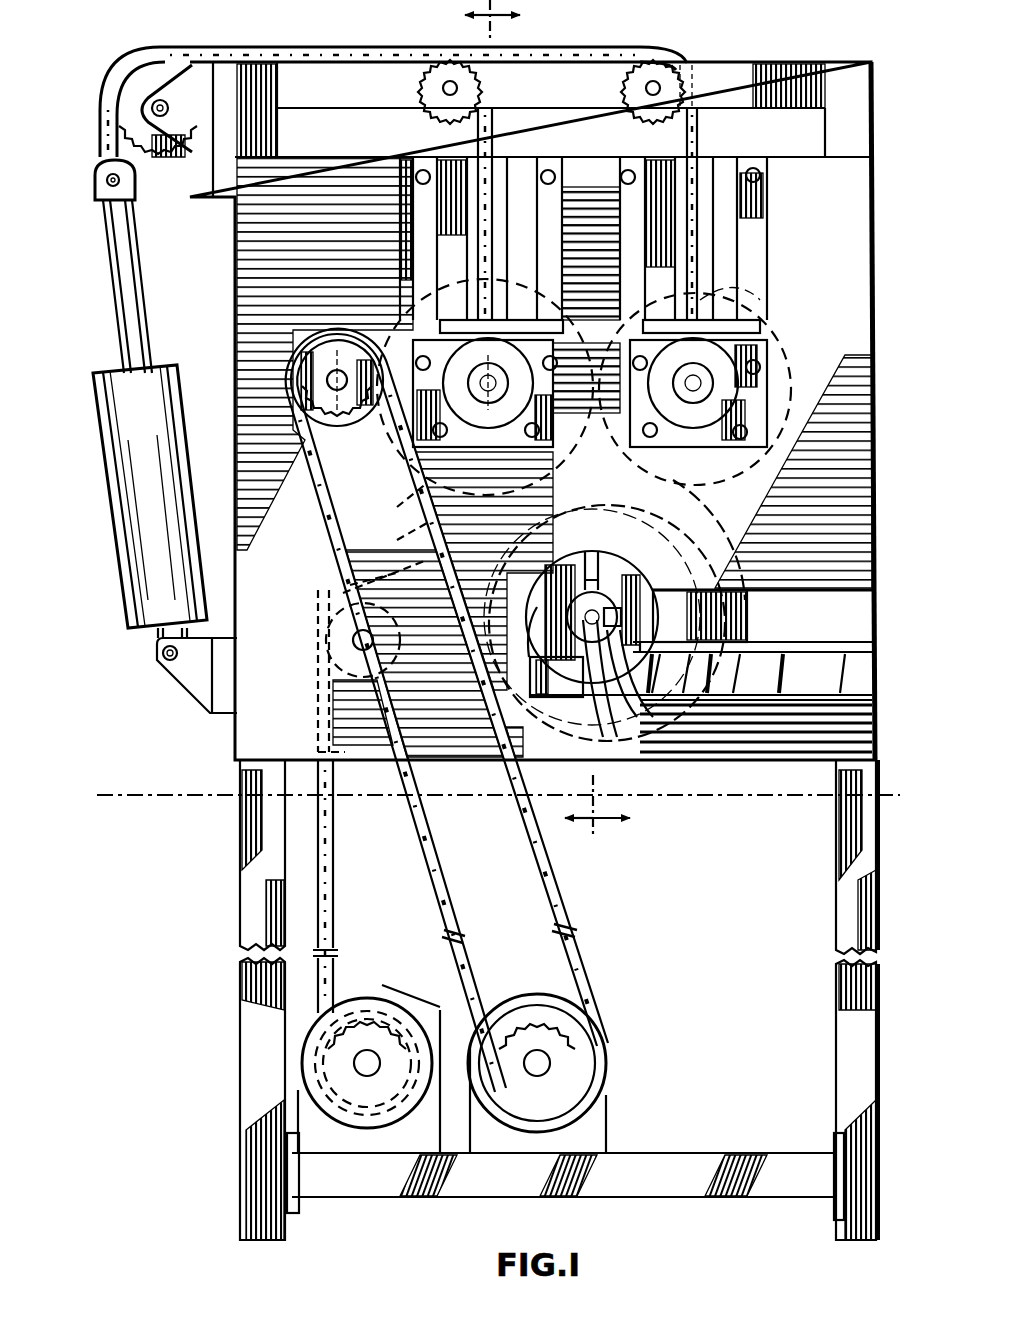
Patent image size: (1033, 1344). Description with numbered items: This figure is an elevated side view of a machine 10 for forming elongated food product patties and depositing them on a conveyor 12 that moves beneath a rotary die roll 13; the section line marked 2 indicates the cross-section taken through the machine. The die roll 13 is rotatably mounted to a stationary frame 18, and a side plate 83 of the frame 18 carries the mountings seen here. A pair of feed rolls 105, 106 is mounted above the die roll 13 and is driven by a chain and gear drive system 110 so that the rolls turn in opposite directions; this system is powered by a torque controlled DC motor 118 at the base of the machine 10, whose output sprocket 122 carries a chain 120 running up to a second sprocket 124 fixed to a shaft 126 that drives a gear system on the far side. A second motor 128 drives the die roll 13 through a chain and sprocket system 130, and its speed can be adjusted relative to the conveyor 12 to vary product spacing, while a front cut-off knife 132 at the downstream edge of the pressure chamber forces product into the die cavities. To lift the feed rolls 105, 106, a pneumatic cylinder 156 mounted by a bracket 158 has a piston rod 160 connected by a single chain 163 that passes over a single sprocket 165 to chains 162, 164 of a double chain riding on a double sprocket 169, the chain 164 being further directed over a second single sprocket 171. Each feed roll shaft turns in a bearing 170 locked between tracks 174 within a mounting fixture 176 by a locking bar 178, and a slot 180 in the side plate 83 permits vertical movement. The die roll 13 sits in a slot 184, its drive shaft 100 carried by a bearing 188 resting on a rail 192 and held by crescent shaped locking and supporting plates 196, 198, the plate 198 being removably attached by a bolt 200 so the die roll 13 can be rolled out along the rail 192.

The machine 10 is at (154, 812).
The conveyor 12 is at (808, 800).
The die roll 13 is at (715, 510).
The frame 18 is at (863, 60).
The side plate 83 is at (845, 282).
The drive shaft 100 is at (556, 677).
The feed roll 105 is at (843, 320).
The feed roll 106 is at (396, 505).
The chain and gear drive system 110 is at (565, 918).
The DC motor 118 is at (608, 1027).
The chain 120 is at (535, 924).
The sprocket 122 is at (575, 1003).
The second sprocket 124 is at (350, 420).
The shaft 126 is at (292, 373).
The second motor 128 is at (385, 987).
The chain and sprocket system 130 is at (332, 909).
The front cut-off knife 132 is at (372, 637).
The pneumatic cylinder 156 is at (123, 605).
The bracket 158 is at (190, 673).
The piston rod 160 is at (138, 259).
The chain 162 is at (487, 130).
The single chain 163 is at (115, 80).
The chain 164 is at (707, 131).
The single sprocket 165 is at (145, 170).
The double sprocket 169 is at (443, 130).
The bearing 170 is at (652, 395).
The second single sprocket 171 is at (660, 126).
The tracks 174 is at (600, 163).
The mounting fixture 176 is at (688, 445).
The locking bar 178 is at (742, 290).
The slot 180 is at (476, 160).
The slot 184 is at (813, 594).
The bearing 188 is at (590, 565).
The rail 192 is at (823, 692).
The locking and supporting plate 196 is at (537, 607).
The locking and supporting plate 198 is at (607, 562).
The bolt 200 is at (627, 570).
The section line 2- 2 is at (561, 424).